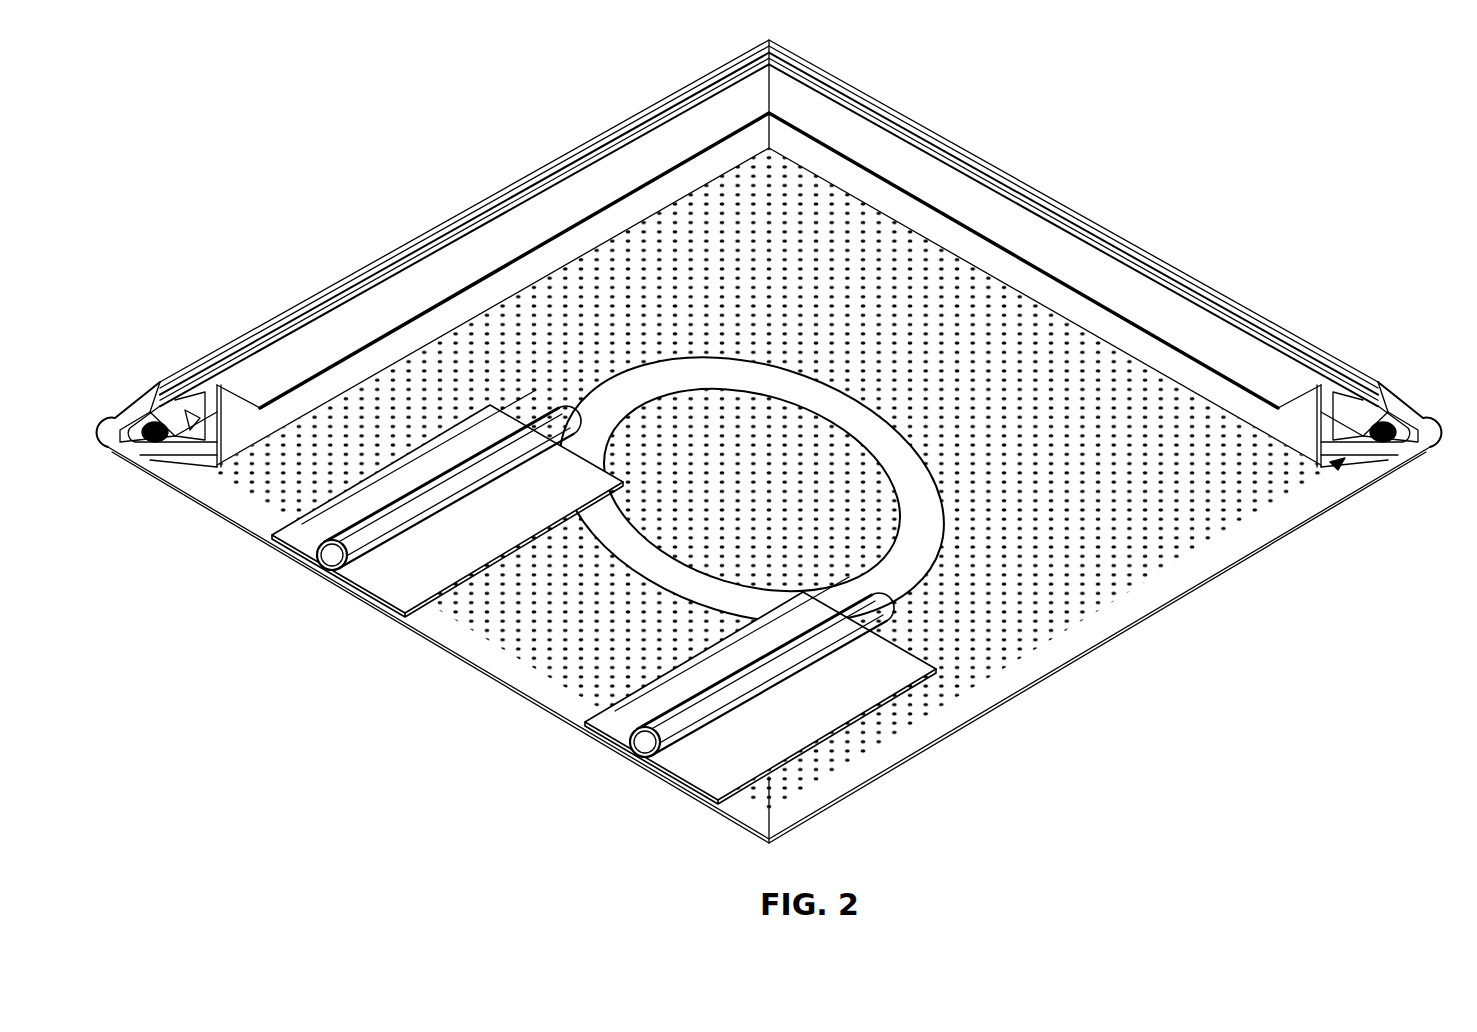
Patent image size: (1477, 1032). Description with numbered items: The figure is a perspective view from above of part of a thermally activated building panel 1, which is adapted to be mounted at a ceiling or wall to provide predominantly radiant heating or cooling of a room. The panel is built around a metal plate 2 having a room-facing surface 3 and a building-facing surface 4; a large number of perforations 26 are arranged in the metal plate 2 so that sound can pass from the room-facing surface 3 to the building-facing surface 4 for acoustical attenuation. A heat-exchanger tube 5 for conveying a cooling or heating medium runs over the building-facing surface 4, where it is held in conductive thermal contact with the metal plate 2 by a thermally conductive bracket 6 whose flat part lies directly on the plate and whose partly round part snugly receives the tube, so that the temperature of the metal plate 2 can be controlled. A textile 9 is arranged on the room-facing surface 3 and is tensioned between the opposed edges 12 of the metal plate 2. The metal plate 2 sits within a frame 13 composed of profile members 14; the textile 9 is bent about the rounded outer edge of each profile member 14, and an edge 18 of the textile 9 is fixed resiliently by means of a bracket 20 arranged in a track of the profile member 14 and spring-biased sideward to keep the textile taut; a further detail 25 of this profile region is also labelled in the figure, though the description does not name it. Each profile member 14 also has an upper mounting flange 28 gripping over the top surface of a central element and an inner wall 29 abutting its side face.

The thermally activated building panel 1 is at (1180, 248).
The metal plate 2 is at (1165, 562).
The room-facing surface 3 is at (524, 706).
The building-facing surface 4 is at (1026, 668).
The heat-exchanger tube 5 is at (862, 430).
The thermally conductive bracket 6 is at (712, 764).
The textile 9 is at (135, 412).
The opposed edges 12 is at (980, 722).
The frame 13 is at (881, 76).
The profile member 14 is at (406, 238).
The edge of the textile 18 is at (1385, 425).
The bracket 20 is at (178, 440).
The groove 25 is at (195, 405).
The perforations 26 is at (1125, 603).
The upper mounting flange 28 is at (1110, 268).
The inner wall 29 is at (1330, 460).